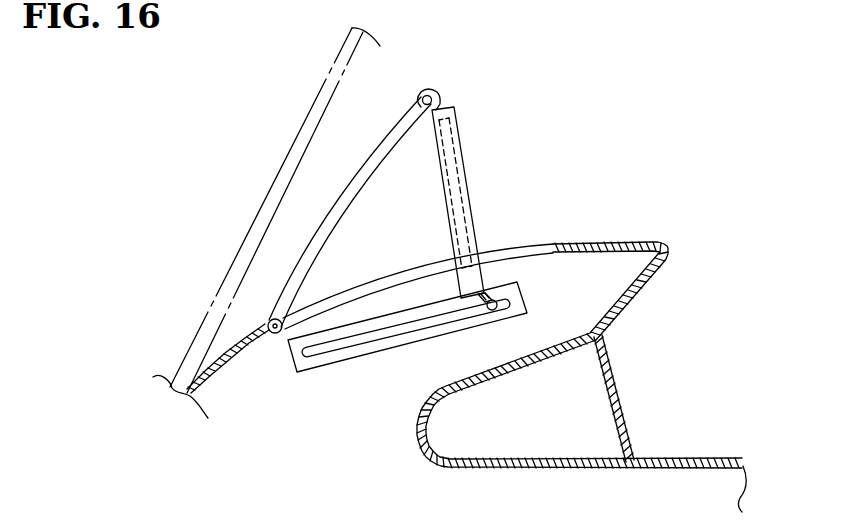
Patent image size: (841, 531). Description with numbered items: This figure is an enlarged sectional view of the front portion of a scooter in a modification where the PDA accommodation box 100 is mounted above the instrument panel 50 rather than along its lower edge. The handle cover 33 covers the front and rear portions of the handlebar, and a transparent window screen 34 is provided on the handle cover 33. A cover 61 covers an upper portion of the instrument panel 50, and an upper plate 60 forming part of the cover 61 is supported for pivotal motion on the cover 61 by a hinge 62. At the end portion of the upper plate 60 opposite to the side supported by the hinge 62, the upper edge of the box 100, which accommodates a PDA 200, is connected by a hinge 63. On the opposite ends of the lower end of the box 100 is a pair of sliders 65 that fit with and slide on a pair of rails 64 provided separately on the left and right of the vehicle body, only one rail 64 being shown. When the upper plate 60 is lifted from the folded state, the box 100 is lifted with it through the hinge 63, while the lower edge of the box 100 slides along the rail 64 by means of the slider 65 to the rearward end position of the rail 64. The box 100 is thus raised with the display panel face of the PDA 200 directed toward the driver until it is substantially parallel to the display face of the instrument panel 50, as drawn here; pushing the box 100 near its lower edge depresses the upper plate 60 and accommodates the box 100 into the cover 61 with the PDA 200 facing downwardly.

The handle cover 33 is at (671, 311).
The window screen 34 is at (289, 150).
The instrument panel 50 is at (631, 400).
The upper plate 60 is at (355, 160).
The cover 61 is at (612, 243).
The hinge 62 is at (273, 334).
The hinge 63 is at (440, 98).
The rail 64 is at (417, 348).
The slider 65 is at (497, 311).
The PDA accommodation box 100 is at (467, 182).
The PDA 200 is at (447, 132).